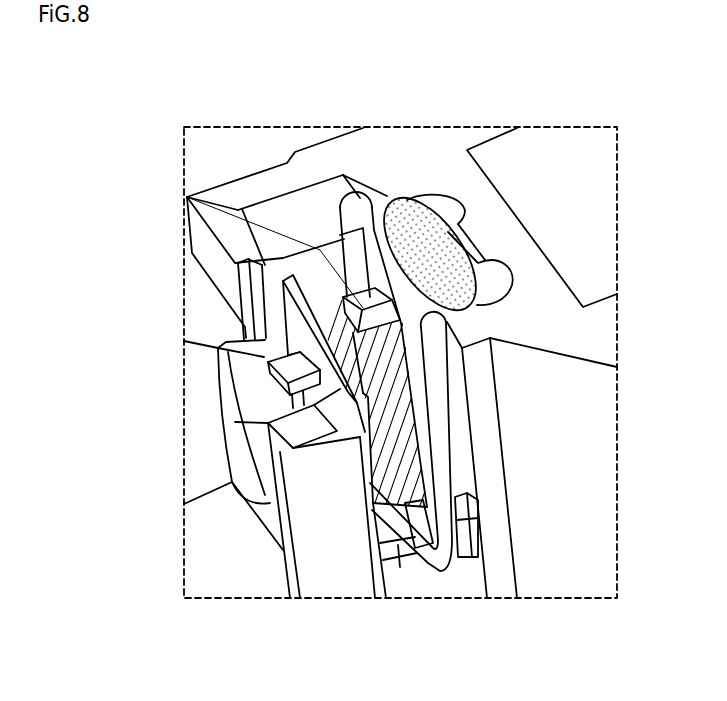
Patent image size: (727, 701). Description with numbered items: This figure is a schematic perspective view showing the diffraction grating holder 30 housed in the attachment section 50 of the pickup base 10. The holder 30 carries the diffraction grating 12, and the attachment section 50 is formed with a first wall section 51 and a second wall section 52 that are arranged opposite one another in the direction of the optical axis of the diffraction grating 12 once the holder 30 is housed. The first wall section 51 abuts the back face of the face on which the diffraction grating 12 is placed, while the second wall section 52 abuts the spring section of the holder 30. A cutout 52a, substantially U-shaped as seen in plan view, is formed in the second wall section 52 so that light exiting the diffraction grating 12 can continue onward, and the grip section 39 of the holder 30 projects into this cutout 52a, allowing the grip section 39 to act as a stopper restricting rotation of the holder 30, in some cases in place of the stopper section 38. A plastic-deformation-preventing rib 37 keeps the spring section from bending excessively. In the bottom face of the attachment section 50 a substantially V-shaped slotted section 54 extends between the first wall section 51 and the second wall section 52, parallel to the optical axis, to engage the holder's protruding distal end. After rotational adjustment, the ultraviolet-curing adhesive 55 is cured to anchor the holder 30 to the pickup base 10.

The pickup base 10 is at (600, 329).
The diffraction grating 12 is at (408, 477).
The diffraction grating holder 30 is at (456, 580).
The plastic-deformation-preventing rib 37 is at (187, 197).
The stopper section 38 is at (472, 537).
The grip section 39 is at (293, 372).
The attachment section 50 is at (339, 214).
The first wall section 51 is at (458, 388).
The second wall section 52 is at (286, 273).
The cutout 52a is at (249, 401).
The slotted section 54 is at (398, 550).
The ultraviolet-curing adhesive 55 is at (432, 255).